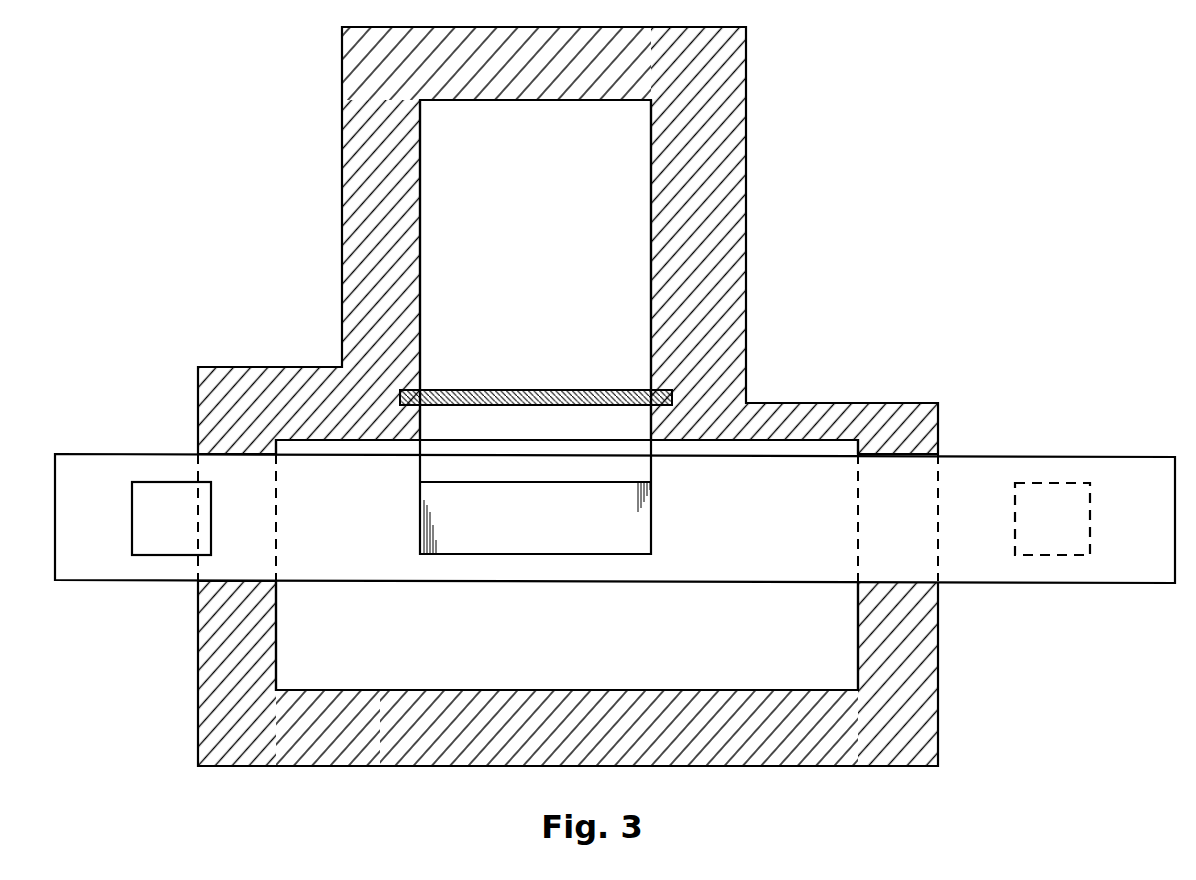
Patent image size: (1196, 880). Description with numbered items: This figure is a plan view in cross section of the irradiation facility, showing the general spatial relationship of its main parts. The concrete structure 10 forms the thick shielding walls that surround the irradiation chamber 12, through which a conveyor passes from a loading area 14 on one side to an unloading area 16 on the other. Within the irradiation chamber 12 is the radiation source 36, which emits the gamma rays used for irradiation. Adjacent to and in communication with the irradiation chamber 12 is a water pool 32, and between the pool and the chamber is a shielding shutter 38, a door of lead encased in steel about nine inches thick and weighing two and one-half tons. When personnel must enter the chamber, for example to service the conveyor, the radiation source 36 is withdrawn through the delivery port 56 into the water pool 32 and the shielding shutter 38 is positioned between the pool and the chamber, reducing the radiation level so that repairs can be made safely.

The concrete structure 10 is at (930, 712).
The irradiation chamber 12 is at (508, 653).
The loading area 14 is at (183, 543).
The unloading area 16 is at (1073, 543).
The water pool 32 is at (506, 253).
The radiation source 36 is at (643, 528).
The shielding shutter 38 is at (623, 391).
The delivery port 56 is at (638, 412).